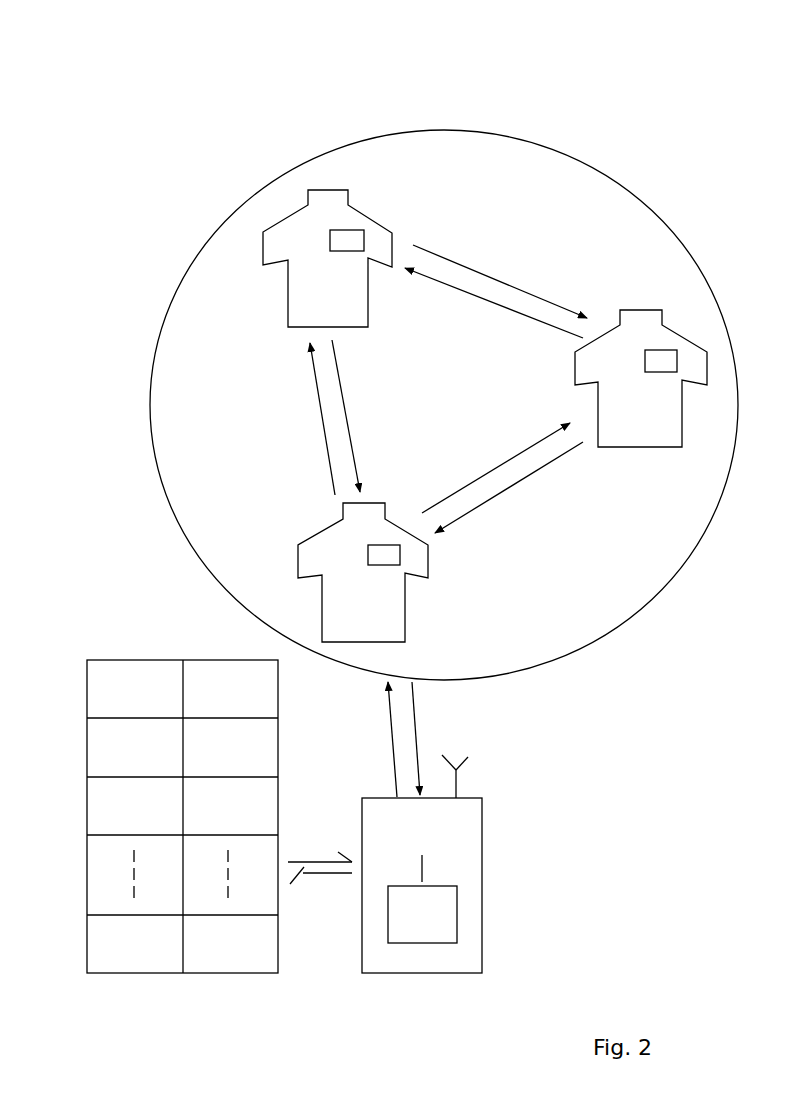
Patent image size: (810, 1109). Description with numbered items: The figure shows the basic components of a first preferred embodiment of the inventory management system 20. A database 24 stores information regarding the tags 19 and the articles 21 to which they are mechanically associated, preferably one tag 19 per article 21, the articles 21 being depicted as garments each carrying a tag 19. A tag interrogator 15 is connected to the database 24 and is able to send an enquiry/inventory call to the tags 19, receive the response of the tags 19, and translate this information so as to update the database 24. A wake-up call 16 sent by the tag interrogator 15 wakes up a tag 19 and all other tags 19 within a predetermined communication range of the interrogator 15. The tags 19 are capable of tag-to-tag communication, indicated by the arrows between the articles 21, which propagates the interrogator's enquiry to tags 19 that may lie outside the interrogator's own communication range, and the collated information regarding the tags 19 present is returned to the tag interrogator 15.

The inventory management system 20 is at (200, 167).
The wake-up call 16 is at (148, 405).
The article 21 is at (338, 317).
The tag 19 is at (366, 250).
The database 24 is at (120, 658).
The tag interrogator 15 is at (485, 885).